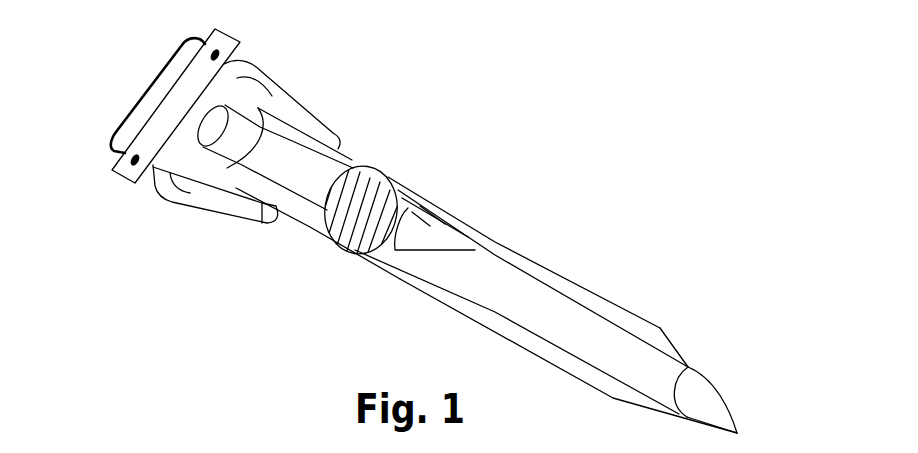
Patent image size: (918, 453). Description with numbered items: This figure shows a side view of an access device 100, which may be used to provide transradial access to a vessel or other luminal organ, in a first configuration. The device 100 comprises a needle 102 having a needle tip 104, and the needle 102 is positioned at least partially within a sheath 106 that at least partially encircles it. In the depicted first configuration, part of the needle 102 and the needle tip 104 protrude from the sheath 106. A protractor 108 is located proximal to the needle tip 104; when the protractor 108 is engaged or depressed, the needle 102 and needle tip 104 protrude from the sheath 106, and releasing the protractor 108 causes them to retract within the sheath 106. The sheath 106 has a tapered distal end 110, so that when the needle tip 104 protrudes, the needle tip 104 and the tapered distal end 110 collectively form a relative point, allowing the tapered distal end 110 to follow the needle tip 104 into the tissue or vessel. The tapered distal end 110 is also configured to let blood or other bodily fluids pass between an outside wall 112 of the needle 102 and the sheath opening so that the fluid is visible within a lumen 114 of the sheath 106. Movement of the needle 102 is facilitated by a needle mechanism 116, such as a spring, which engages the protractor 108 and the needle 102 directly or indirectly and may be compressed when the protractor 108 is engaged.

The device 100 is at (374, 104).
The needle 102 is at (527, 273).
The needle tip 104 is at (718, 388).
The sheath 106 is at (600, 296).
The protractor 108 is at (172, 72).
The tapered distal end 110 is at (673, 341).
The outside wall 112 is at (477, 263).
The lumen 114 is at (458, 302).
The needle mechanism 116 is at (378, 175).